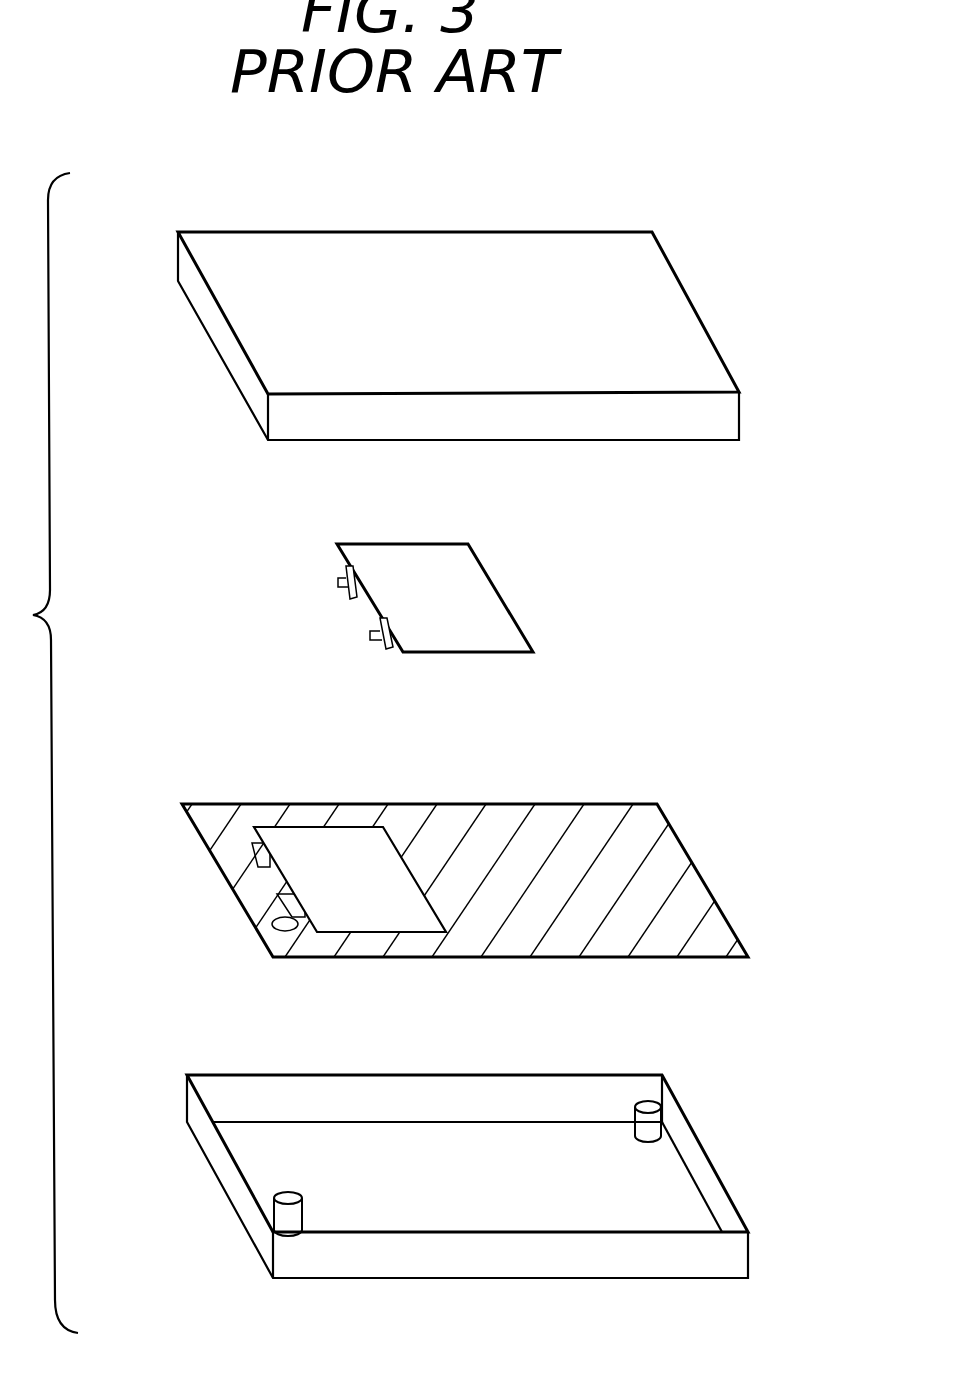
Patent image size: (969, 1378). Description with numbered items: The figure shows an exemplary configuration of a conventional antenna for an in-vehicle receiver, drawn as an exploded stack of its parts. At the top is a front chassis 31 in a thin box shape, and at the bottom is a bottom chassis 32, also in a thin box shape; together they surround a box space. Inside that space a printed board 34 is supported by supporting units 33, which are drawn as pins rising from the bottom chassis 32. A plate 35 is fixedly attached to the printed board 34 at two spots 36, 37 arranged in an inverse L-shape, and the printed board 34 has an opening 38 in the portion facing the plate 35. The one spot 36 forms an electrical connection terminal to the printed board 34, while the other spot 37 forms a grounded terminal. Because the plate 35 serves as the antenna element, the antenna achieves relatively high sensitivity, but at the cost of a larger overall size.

The front chassis 31 is at (670, 300).
The bottom chassis 32 is at (672, 1187).
The supporting units 33 is at (288, 1195).
The printed board 34 is at (658, 838).
The plate 35 is at (478, 588).
The spot 36 is at (345, 582).
The spot 37 is at (372, 633).
The opening 38 is at (322, 837).